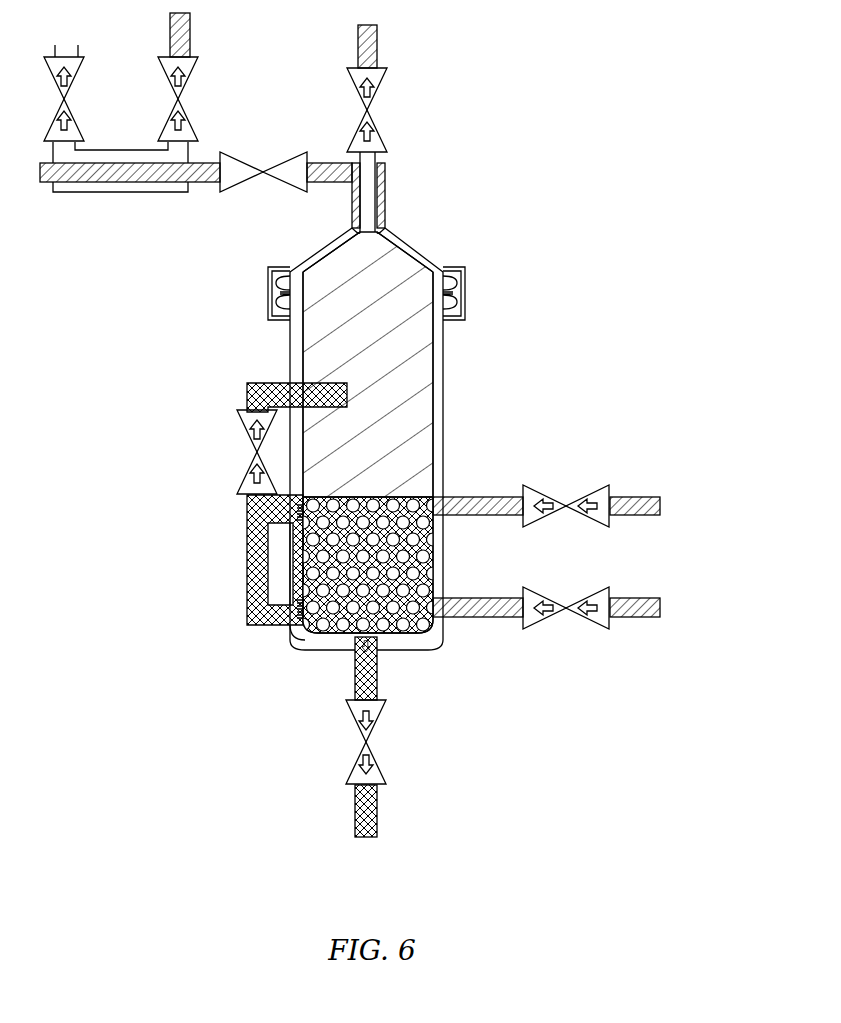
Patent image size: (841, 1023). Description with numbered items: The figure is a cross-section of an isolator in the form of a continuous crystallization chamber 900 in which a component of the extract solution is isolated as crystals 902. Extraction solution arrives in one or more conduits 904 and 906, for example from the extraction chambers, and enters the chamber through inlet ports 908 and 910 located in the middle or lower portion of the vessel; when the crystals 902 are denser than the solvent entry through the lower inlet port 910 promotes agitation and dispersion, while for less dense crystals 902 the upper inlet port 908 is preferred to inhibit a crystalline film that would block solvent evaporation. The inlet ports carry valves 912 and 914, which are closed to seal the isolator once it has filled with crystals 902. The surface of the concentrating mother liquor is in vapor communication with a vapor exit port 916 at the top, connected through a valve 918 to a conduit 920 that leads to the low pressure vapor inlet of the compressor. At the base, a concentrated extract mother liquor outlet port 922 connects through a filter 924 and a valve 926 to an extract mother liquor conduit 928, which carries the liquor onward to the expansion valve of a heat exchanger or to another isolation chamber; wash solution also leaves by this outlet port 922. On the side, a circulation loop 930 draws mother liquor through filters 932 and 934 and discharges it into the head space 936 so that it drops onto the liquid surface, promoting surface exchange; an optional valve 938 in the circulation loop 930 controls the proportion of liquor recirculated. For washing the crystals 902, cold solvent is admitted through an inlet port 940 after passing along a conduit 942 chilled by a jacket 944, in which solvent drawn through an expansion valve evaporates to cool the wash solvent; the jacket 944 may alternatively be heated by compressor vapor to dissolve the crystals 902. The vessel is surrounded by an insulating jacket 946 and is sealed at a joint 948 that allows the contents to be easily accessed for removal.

The continuous crystallization chamber 900 is at (485, 118).
The crystals 902 is at (393, 497).
The conduit 904 is at (660, 507).
The conduit 906 is at (660, 608).
The upper inlet port 908 is at (448, 515).
The lower inlet port 910 is at (447, 598).
The valve 912 is at (552, 512).
The valve 914 is at (555, 600).
The vapor exit port 916 is at (385, 237).
The valve 918 is at (382, 80).
The conduit 920 is at (377, 38).
The concentrated extract mother liquor outlet port 922 is at (377, 688).
The filter 924 is at (375, 655).
The valve 926 is at (370, 745).
The extract mother liquor conduit 928 is at (367, 835).
The circulation loop 930 is at (247, 575).
The filter 932 is at (297, 520).
The filter 934 is at (300, 647).
The head space 936 is at (415, 447).
The valve 938 is at (255, 470).
The inlet port 940 is at (340, 252).
The conduit 942 is at (212, 180).
The jacket 944 is at (137, 192).
The insulating jacket 946 is at (297, 337).
The joint 948 is at (443, 318).